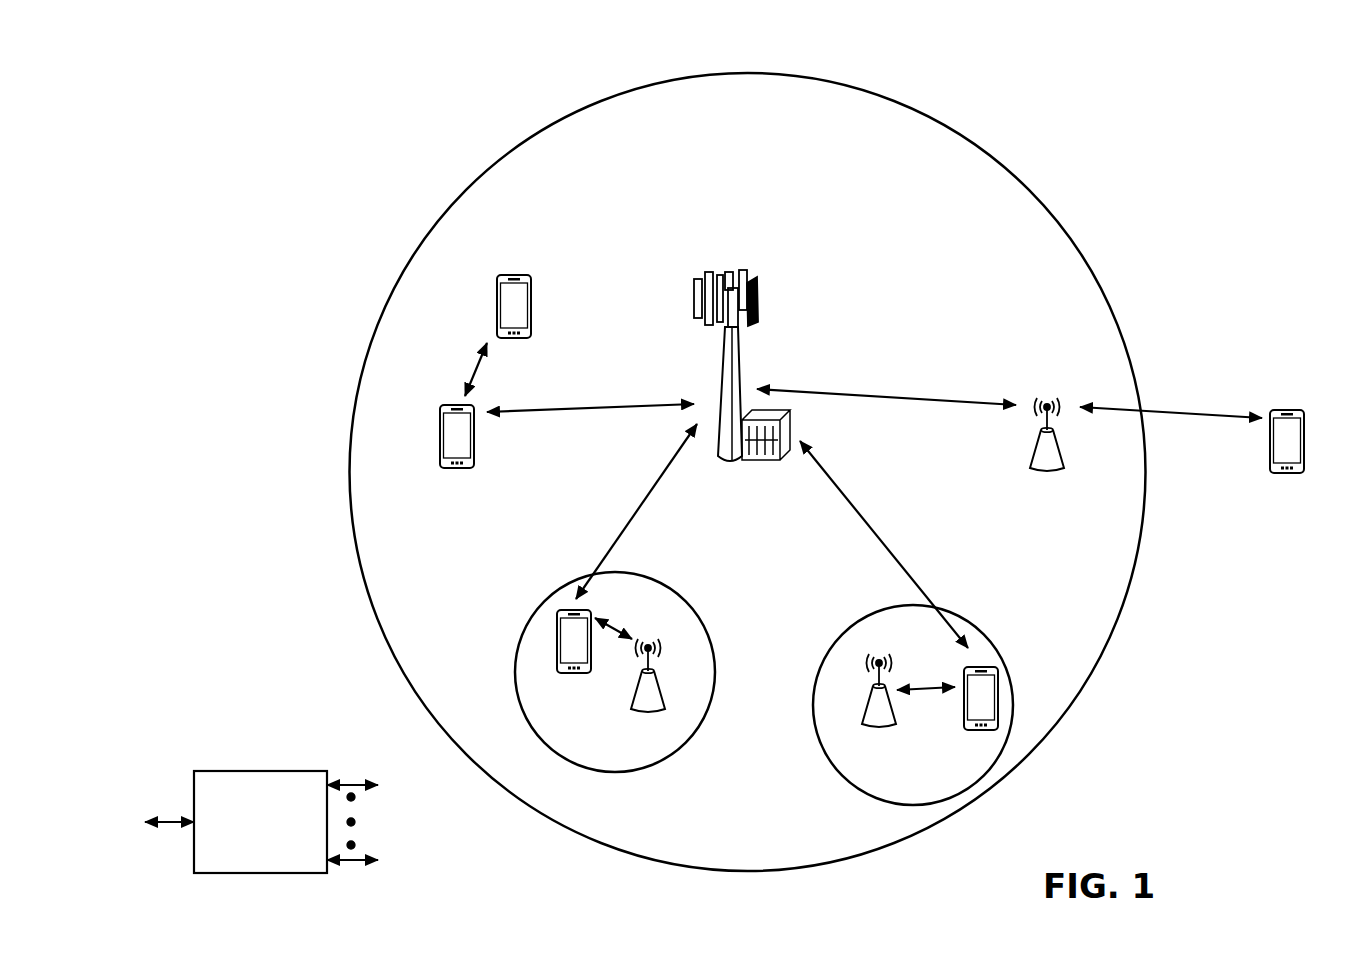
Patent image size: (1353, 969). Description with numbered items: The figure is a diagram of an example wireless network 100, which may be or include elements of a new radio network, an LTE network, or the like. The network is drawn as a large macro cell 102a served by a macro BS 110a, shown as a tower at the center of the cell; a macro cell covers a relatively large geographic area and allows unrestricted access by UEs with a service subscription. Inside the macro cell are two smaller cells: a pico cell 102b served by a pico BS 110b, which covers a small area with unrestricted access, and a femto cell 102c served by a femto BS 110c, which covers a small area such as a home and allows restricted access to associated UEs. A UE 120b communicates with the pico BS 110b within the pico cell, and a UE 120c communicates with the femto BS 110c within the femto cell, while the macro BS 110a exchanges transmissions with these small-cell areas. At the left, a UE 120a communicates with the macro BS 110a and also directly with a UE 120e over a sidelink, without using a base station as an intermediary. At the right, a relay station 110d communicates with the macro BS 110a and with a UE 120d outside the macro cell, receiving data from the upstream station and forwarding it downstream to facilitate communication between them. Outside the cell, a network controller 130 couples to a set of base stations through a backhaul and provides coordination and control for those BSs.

The wireless network 100 is at (244, 69).
The macro cell 102a is at (1012, 174).
The pico cell 102b is at (697, 613).
The femto cell 102c is at (857, 622).
The macro BS 110a is at (738, 262).
The pico BS 110b is at (667, 702).
The femto BS 110c is at (862, 718).
The relay station 110d is at (1047, 398).
The UE 120a is at (440, 432).
The UE 120b is at (560, 673).
The UE 120c is at (962, 731).
The UE 120d is at (1298, 410).
The UE 120e is at (497, 296).
The network controller 130 is at (258, 771).